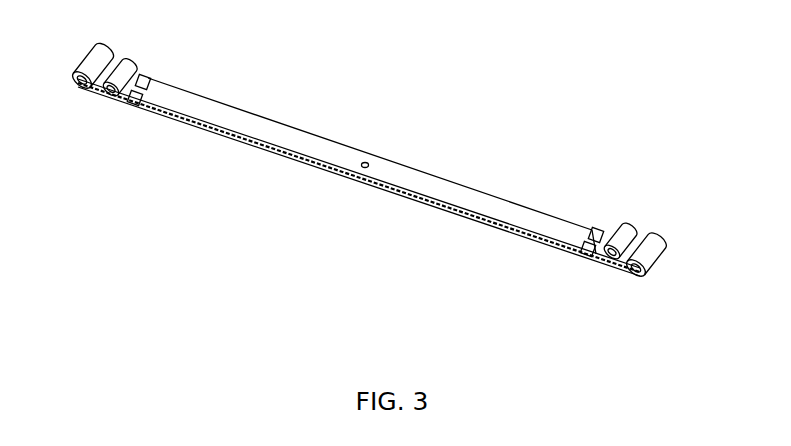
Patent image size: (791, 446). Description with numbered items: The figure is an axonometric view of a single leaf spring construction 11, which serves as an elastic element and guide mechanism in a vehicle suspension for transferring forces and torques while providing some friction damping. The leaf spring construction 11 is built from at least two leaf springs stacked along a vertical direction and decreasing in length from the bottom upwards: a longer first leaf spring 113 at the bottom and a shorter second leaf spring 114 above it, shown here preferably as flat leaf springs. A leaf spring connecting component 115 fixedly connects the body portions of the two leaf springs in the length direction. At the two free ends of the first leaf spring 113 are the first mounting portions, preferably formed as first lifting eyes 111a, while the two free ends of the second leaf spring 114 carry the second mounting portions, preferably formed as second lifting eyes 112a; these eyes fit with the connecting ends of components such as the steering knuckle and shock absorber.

The leaf spring construction 11 is at (446, 31).
The first lifting eye 111a is at (75, 85).
The second lifting eye 112a is at (102, 94).
The first leaf spring 113 is at (400, 202).
The second leaf spring 114 is at (415, 172).
The leaf spring connecting component 115 is at (138, 100).